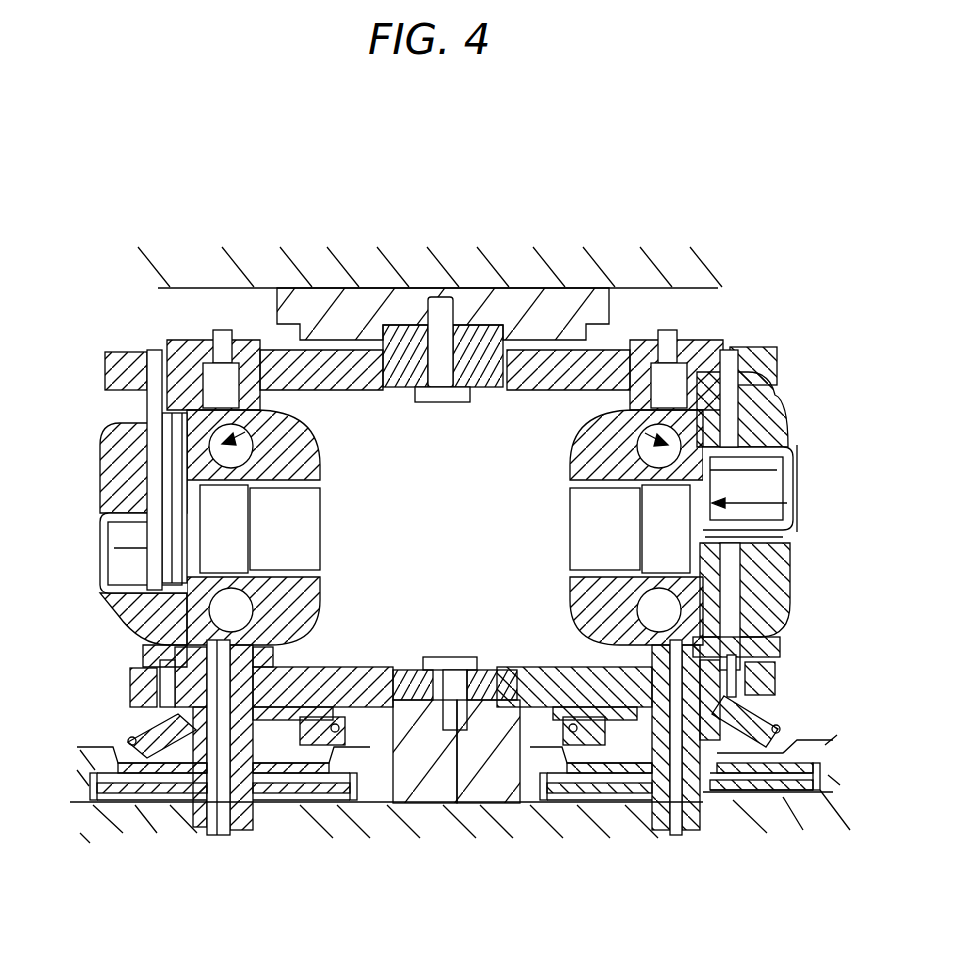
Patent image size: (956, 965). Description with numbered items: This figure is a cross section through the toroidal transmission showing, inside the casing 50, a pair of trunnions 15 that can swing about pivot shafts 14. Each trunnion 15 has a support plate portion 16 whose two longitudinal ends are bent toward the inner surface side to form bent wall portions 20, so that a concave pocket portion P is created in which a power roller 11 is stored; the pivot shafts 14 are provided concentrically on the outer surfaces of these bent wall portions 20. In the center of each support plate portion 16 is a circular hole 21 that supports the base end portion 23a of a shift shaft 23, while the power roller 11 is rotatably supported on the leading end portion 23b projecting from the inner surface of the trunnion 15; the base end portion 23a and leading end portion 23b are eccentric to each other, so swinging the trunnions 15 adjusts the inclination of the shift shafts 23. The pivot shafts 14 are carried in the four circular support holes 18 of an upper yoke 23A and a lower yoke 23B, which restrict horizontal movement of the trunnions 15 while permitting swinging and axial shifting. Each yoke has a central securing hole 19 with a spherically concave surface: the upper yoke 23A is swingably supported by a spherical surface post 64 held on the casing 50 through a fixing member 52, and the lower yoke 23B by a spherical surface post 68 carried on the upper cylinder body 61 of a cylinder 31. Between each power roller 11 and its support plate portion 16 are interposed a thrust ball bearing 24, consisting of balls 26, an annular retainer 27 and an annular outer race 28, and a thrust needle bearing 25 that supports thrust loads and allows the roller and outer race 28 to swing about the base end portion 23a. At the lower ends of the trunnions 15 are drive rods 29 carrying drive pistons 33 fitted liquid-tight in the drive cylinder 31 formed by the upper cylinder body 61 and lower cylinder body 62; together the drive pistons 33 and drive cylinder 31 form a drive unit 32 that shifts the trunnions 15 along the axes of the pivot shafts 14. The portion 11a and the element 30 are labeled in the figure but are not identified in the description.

The power roller 11 is at (300, 455).
The raceway portion 11a is at (300, 437).
The pivot shaft 14 is at (183, 330).
The trunnion 15 is at (127, 477).
The support plate portion 16 is at (103, 437).
The circular support hole 18 is at (300, 350).
The securing hole 19 is at (473, 317).
The bent wall portion 20 is at (257, 397).
The circular hole 21 is at (100, 530).
The shift shaft 23 is at (100, 547).
The base end portion 23a is at (127, 573).
The upper yoke 23A is at (110, 352).
The lower yoke 23B is at (778, 677).
The leading end portion 23b is at (290, 508).
The thrust ball bearing 24 is at (105, 363).
The thrust needle bearing 25 is at (126, 622).
The ball 26 is at (100, 448).
The retainer 27 is at (227, 390).
The outer race 28 is at (150, 417).
The drive rod 29 is at (222, 833).
The stud 30 is at (143, 357).
The drive cylinder 31 is at (456, 809).
The drive unit 32 is at (730, 803).
The drive piston 33 is at (130, 807).
The casing 50 is at (592, 325).
The fixing member 52 is at (522, 300).
The upper cylinder body 61 is at (477, 787).
The lower cylinder body 62 is at (448, 805).
The spherical surface post 64 is at (412, 335).
The spherical surface post 68 is at (500, 663).
The pocket portion P is at (262, 430).